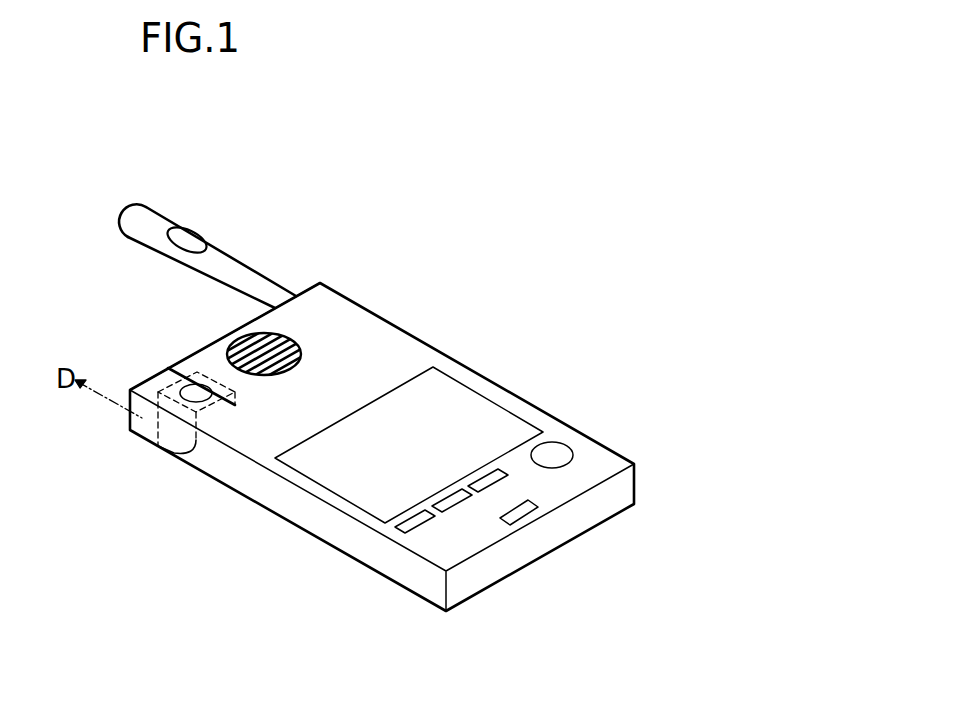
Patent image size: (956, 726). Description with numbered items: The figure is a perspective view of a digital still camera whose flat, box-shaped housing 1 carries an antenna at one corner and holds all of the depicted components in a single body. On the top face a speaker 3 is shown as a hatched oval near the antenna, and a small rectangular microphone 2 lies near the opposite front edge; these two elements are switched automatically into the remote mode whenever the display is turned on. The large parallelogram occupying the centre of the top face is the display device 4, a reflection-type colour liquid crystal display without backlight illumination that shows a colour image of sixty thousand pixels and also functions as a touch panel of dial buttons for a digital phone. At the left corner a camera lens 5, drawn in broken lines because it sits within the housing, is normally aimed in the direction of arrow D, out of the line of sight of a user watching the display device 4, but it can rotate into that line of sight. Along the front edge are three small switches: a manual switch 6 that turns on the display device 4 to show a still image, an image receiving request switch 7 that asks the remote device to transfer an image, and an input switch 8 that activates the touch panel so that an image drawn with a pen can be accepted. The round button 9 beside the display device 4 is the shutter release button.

The portable terminal main body 1 is at (378, 333).
The microphone 2 is at (520, 515).
The speaker 3 is at (238, 343).
The display device 4 is at (478, 407).
The camera lens 5 is at (173, 438).
The manual switch 6 is at (405, 525).
The image receiving request switch 7 is at (445, 502).
The input switch 8 is at (497, 475).
The shutter release button 9 is at (563, 453).